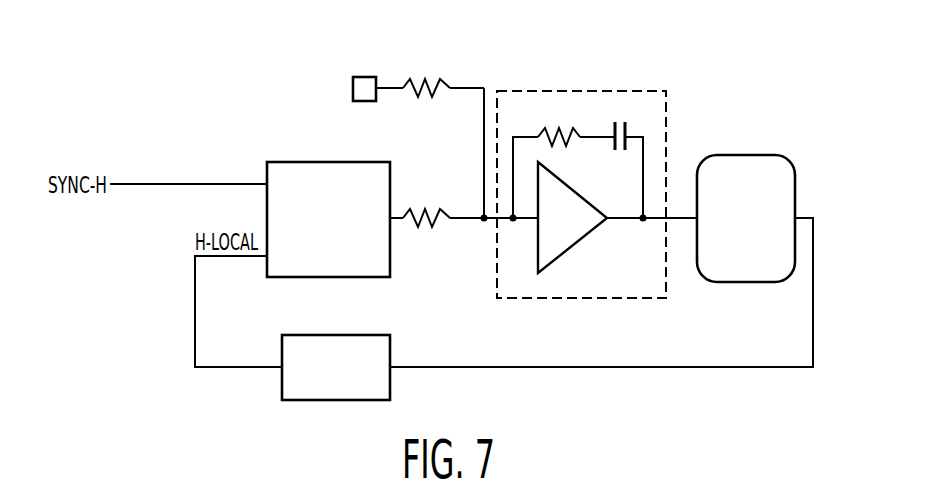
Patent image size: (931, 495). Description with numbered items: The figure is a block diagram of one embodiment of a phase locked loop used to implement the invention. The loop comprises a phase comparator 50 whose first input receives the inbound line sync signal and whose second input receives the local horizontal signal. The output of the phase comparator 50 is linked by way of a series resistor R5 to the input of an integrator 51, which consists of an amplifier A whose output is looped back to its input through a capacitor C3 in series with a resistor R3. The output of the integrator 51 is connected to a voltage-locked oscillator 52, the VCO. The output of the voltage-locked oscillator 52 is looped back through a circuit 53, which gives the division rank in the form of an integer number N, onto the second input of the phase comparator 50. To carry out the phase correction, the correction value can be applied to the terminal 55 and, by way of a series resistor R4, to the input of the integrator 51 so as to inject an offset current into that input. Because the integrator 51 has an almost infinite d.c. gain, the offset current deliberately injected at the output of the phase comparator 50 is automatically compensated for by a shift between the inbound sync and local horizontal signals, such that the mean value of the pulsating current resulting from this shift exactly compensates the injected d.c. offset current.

The phase comparator 50 is at (330, 162).
The integrator 51 is at (622, 91).
The voltage-locked oscillator 52 is at (745, 155).
The circuit giving the division rank 53 is at (380, 335).
The terminal 55 is at (365, 77).
The resistor R3 is at (563, 130).
The series resistor R4 is at (434, 84).
The series resistor R5 is at (433, 212).
The capacitor C3 is at (615, 150).
The amplifier A is at (568, 253).